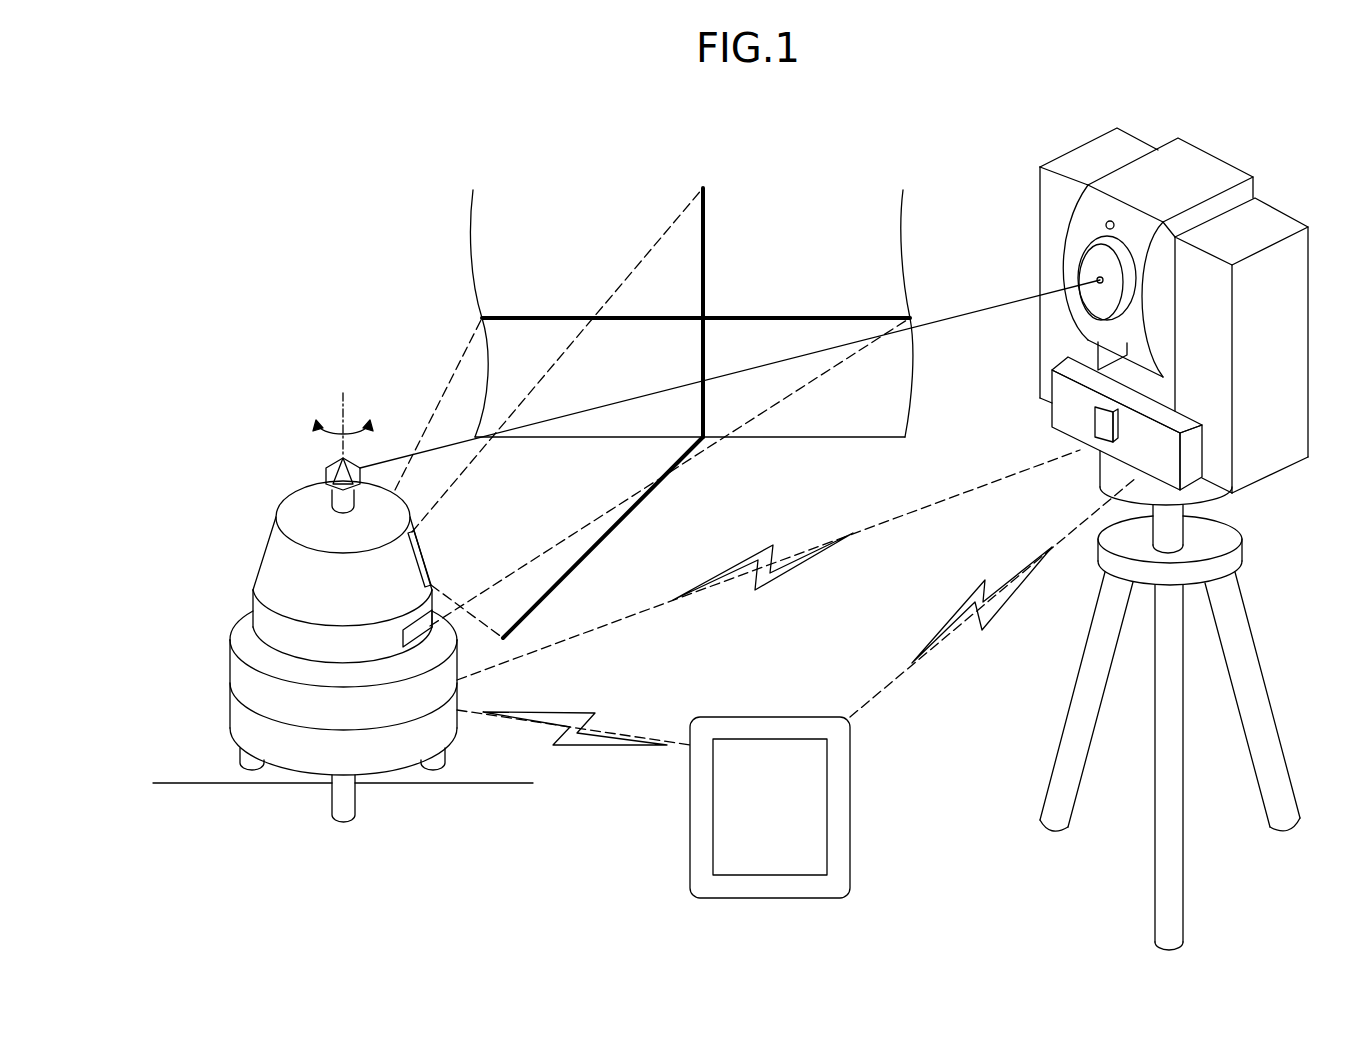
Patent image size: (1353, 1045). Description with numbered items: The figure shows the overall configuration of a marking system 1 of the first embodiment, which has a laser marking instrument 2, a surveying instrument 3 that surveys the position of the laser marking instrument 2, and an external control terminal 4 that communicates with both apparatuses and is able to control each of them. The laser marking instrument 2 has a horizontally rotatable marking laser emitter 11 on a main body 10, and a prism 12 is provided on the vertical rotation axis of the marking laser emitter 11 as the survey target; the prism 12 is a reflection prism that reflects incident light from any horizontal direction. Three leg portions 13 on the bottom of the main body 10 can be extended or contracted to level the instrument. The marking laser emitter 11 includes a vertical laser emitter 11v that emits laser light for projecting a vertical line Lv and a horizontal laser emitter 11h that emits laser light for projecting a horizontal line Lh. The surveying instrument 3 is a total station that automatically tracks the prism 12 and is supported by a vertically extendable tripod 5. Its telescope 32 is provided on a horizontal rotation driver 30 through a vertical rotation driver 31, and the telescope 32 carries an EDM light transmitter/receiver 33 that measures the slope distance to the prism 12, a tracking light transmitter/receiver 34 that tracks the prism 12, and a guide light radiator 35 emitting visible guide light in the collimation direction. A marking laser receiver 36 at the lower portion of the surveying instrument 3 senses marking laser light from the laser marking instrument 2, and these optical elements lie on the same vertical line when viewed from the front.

The marking system 1 is at (306, 215).
The laser marking instrument 2 is at (240, 455).
The surveying instrument 3 is at (1290, 171).
The external control terminal 4 is at (783, 711).
The tripod 5 is at (1242, 543).
The main body 10 is at (230, 650).
The marking laser emitter 11 is at (262, 553).
The vertical laser emitter 11v is at (425, 557).
The horizontal laser emitter 11h is at (425, 632).
The prism 12 is at (327, 470).
The leg portions 13 is at (258, 772).
The horizontal rotation driver 30 is at (1098, 473).
The vertical rotation driver 31 is at (1040, 270).
The telescope 32 is at (1065, 246).
The EDM light transmitter/receiver 33 is at (1053, 302).
The tracking light transmitter/receiver 34 is at (1097, 284).
The guide light radiator 35 is at (1105, 223).
The marking laser receiver 36 is at (1094, 426).
The vertical line Lv is at (712, 250).
The horizontal line Lh is at (790, 316).